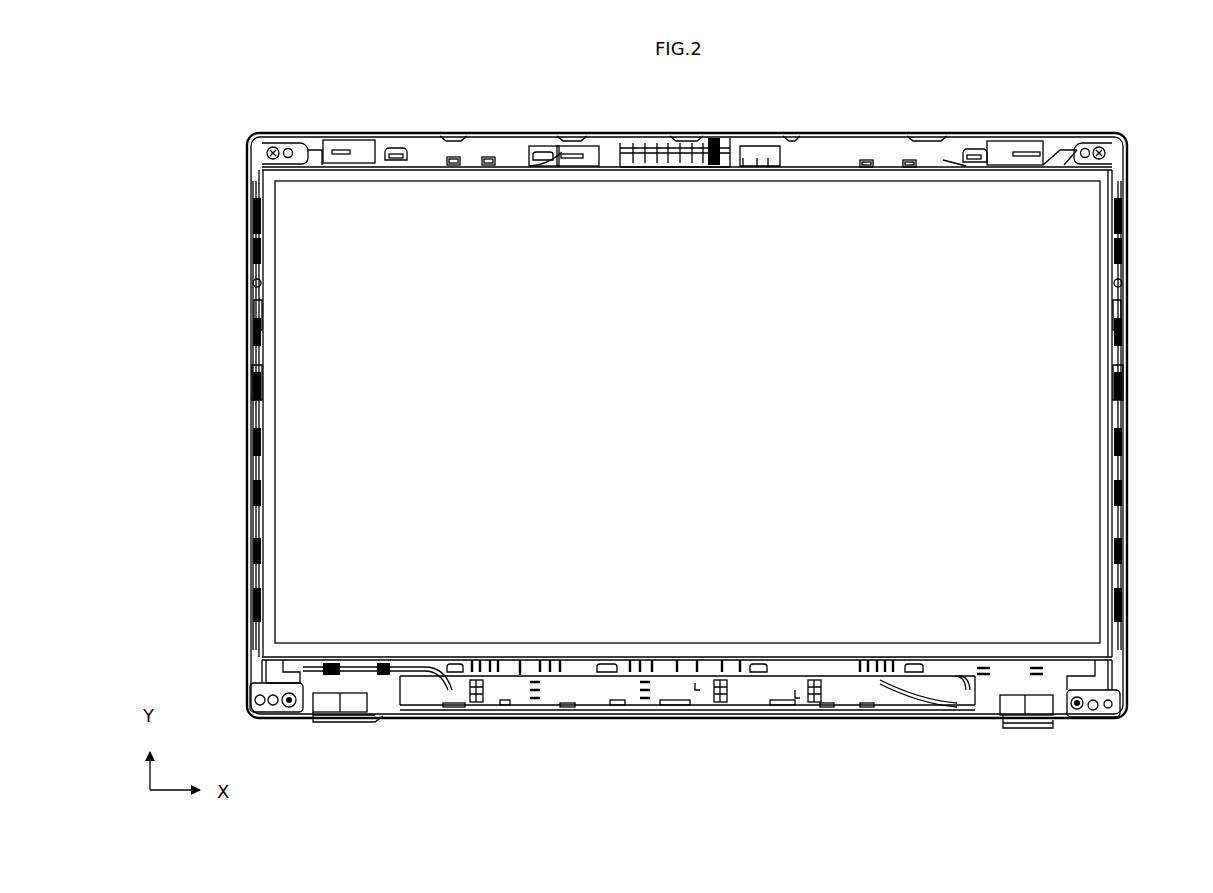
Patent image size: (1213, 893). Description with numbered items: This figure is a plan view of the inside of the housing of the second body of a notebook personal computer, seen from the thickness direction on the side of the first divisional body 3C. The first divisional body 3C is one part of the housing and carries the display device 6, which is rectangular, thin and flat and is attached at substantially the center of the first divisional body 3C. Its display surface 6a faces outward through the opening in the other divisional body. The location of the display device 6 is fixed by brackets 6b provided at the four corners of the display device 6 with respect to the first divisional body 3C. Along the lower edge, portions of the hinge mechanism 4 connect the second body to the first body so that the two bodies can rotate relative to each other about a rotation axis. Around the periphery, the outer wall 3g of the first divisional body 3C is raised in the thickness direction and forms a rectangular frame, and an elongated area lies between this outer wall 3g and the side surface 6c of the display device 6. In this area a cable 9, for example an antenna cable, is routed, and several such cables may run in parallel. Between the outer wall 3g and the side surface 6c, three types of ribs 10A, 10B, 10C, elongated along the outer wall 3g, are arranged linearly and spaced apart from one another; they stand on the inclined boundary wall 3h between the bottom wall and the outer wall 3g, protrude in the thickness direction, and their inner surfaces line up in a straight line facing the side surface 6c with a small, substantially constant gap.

The display device 6 is at (792, 165).
The display surface 6a is at (607, 200).
The brackets 6b is at (273, 141).
The side surface 6c is at (254, 283).
The outer wall 3g is at (455, 137).
The inclined boundary wall 3h is at (889, 150).
The first divisional body 3C is at (1013, 134).
The cable 9 is at (253, 313).
The rib 10A is at (264, 214).
The rib 10B is at (264, 262).
The rib 10C is at (264, 326).
The hinge mechanism 4 is at (359, 724).